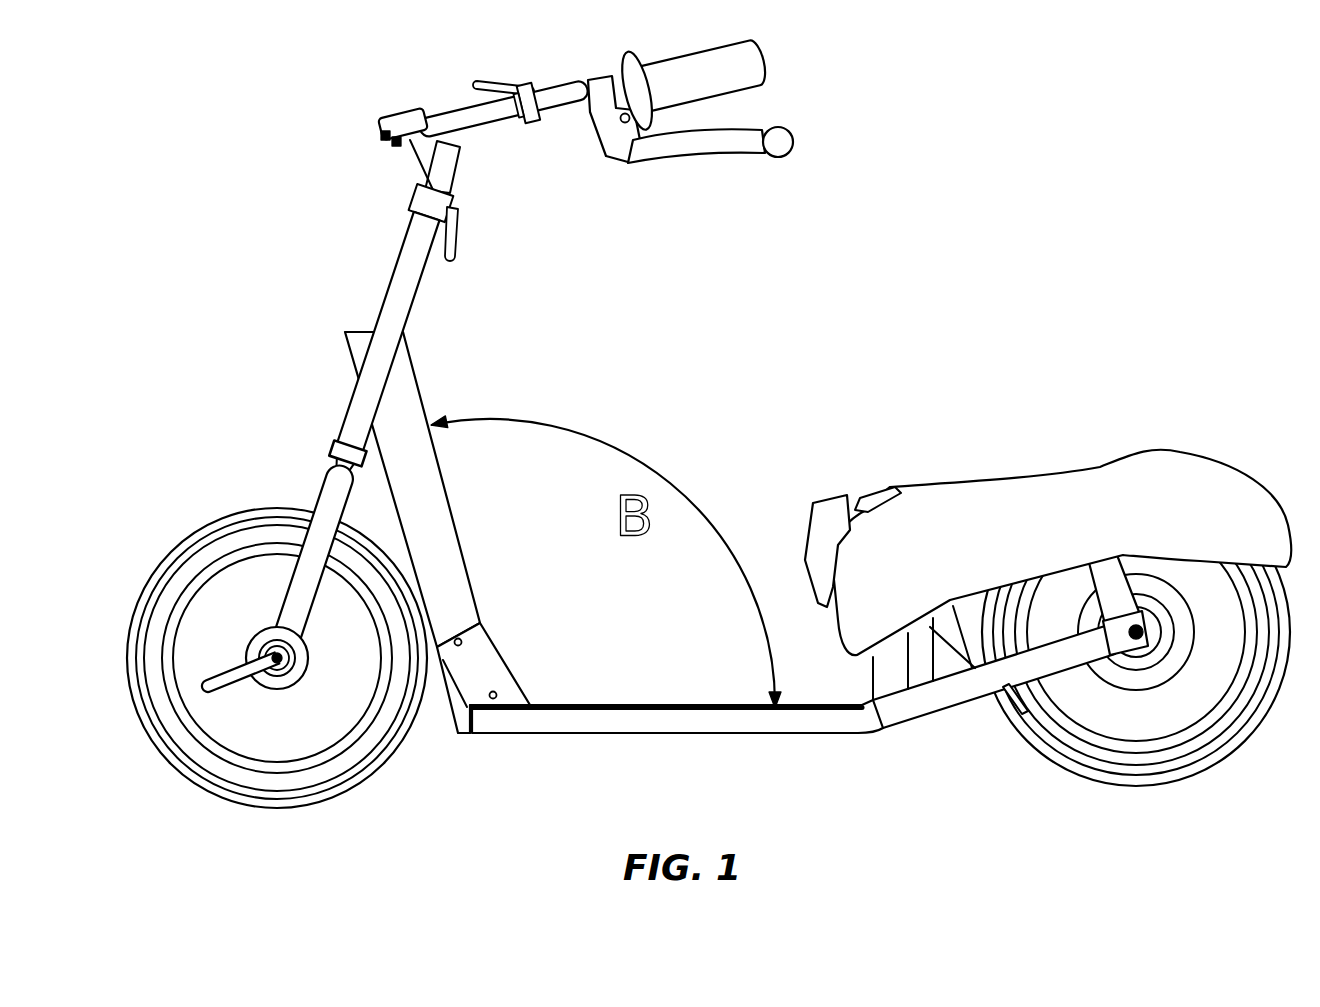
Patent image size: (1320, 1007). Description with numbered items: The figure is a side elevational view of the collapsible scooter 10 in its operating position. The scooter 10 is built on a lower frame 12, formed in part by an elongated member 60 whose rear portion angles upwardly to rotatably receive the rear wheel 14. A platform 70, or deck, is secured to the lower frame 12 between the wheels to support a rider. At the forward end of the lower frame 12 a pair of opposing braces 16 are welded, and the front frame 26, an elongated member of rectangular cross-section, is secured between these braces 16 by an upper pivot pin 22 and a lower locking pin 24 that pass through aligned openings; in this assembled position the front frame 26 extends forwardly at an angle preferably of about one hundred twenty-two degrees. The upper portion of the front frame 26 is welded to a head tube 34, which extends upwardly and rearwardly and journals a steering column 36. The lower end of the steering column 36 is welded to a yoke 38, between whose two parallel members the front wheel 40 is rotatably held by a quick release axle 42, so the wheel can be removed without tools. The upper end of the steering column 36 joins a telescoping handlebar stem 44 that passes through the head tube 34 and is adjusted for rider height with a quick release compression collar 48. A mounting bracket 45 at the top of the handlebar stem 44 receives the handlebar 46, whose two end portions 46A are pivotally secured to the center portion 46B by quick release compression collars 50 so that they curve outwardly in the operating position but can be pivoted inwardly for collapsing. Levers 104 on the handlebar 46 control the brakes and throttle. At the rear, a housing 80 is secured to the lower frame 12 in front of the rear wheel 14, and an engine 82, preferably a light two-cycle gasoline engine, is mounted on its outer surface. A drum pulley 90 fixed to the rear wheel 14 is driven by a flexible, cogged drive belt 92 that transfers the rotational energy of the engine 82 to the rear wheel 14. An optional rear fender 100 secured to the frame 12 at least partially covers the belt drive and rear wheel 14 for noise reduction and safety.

The scooter 10 is at (355, 100).
The lower frame 12 is at (677, 723).
The rear wheel 14 is at (1240, 705).
The braces 16 is at (466, 682).
The upper pivot pin 22 is at (462, 641).
The lower locking pin 24 is at (498, 693).
The front frame 26 is at (448, 537).
The head tube 34 is at (385, 335).
The steering column 36 is at (336, 457).
The yoke 38 is at (328, 500).
The front wheel 40 is at (160, 570).
The quick release axle 42 is at (283, 674).
The handlebar stem 44 is at (438, 183).
The mounting bracket 45 is at (388, 117).
The handlebar 46 is at (509, 125).
The end portions 46A is at (557, 110).
The center portion 46B is at (492, 120).
The quick release compression collar 48 is at (460, 208).
The quick release compression collars 50 is at (533, 98).
The elongated member 60 is at (785, 722).
The platform 70 is at (622, 700).
The housing 80 is at (885, 677).
The engine 82 is at (835, 503).
The drum pulley 90 is at (1012, 722).
The drive belt 92 is at (968, 672).
The rear fender 100 is at (1113, 487).
The levers 104 is at (709, 143).